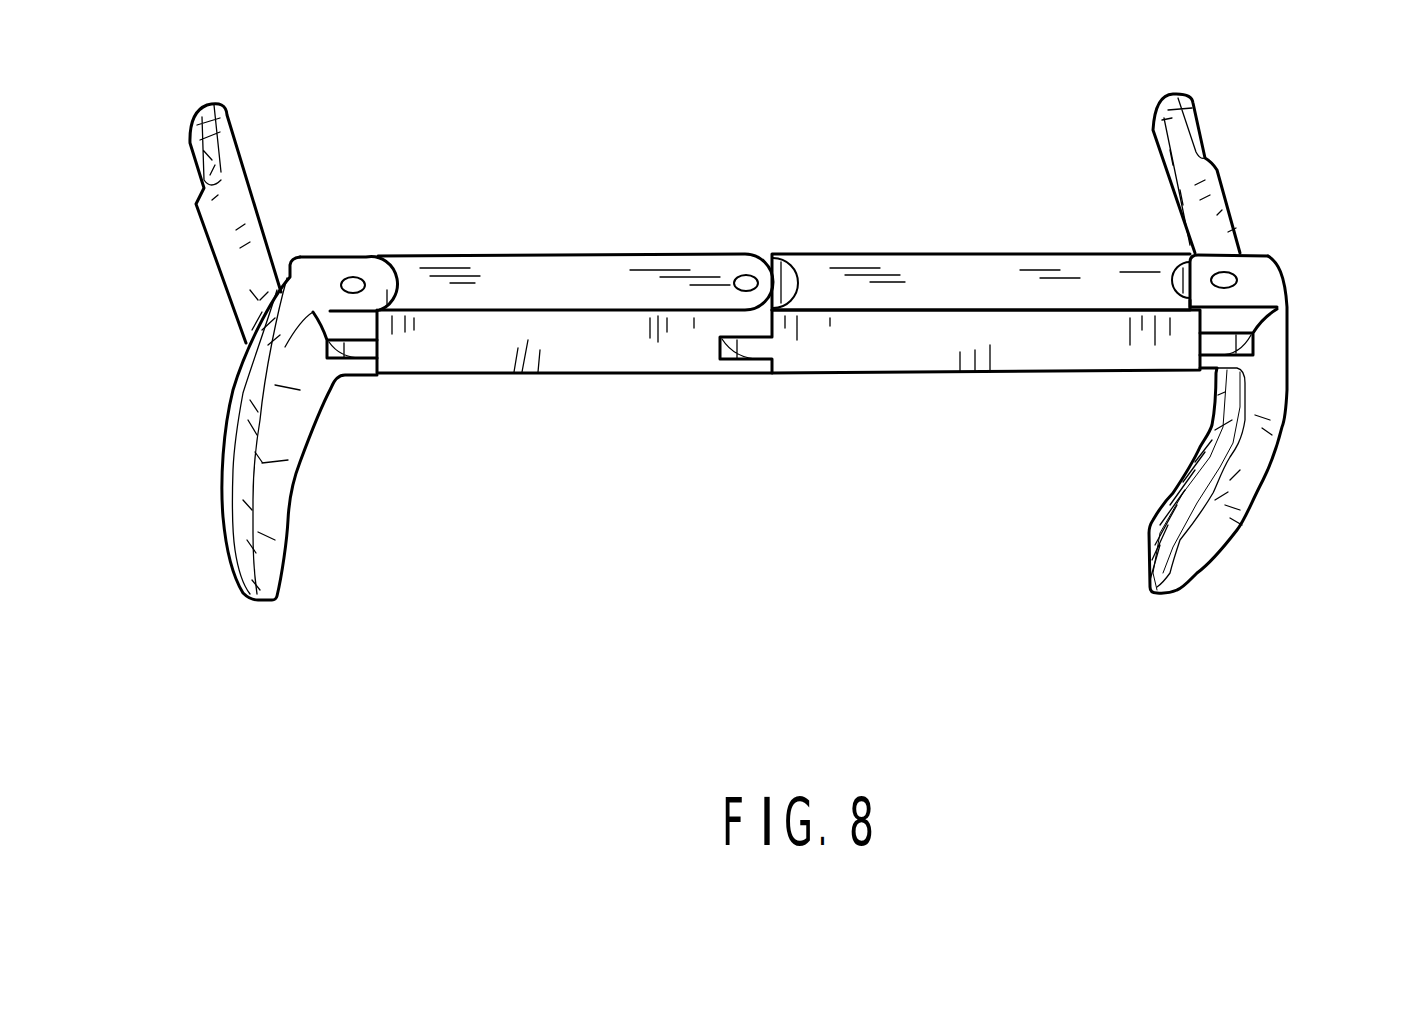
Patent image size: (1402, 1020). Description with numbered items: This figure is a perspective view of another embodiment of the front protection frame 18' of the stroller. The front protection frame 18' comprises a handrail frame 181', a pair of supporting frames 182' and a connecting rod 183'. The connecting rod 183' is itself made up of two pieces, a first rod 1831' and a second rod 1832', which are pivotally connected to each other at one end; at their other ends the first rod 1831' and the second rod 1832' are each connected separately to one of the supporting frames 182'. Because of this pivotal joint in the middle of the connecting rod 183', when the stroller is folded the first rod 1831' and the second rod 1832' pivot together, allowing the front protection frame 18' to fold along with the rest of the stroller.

The front protection frame 18' is at (732, 354).
The handrail frame 181' is at (760, 210).
The supporting frame 182' is at (732, 427).
The connecting rod 183' is at (788, 274).
The first rod 1831' is at (575, 362).
The second rod 1832' is at (986, 366).